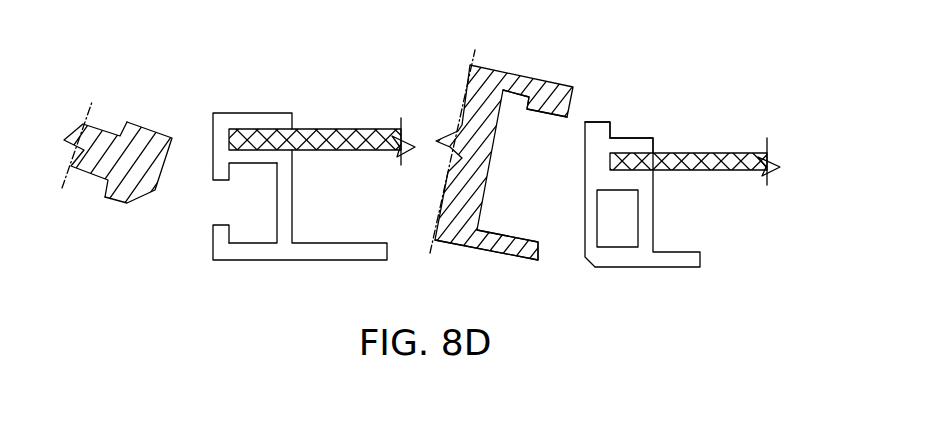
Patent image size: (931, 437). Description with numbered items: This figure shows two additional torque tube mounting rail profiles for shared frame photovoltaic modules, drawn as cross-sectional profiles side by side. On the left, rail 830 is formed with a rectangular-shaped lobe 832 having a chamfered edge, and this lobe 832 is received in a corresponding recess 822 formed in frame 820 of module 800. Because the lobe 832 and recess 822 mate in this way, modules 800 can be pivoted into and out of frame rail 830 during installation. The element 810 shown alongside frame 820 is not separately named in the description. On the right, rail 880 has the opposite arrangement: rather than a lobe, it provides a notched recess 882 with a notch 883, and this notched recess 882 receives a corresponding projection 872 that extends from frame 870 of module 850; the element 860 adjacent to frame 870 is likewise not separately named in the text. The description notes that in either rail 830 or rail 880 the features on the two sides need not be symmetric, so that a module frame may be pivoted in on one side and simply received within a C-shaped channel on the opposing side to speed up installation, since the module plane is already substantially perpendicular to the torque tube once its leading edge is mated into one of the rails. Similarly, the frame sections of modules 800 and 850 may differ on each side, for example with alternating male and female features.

The module 800 is at (300, 78).
The rod 810 is at (342, 127).
The frame 820 is at (238, 102).
The recess 822 is at (248, 212).
The rail 830 is at (103, 132).
The rectangular-shaped lobe 832 is at (150, 120).
The module 850 is at (725, 103).
The second rod 860 is at (732, 172).
The frame 870 is at (632, 137).
The projection 872 is at (597, 122).
The rail 880 is at (493, 53).
The notched recess 882 is at (515, 220).
The notch 883 is at (512, 112).